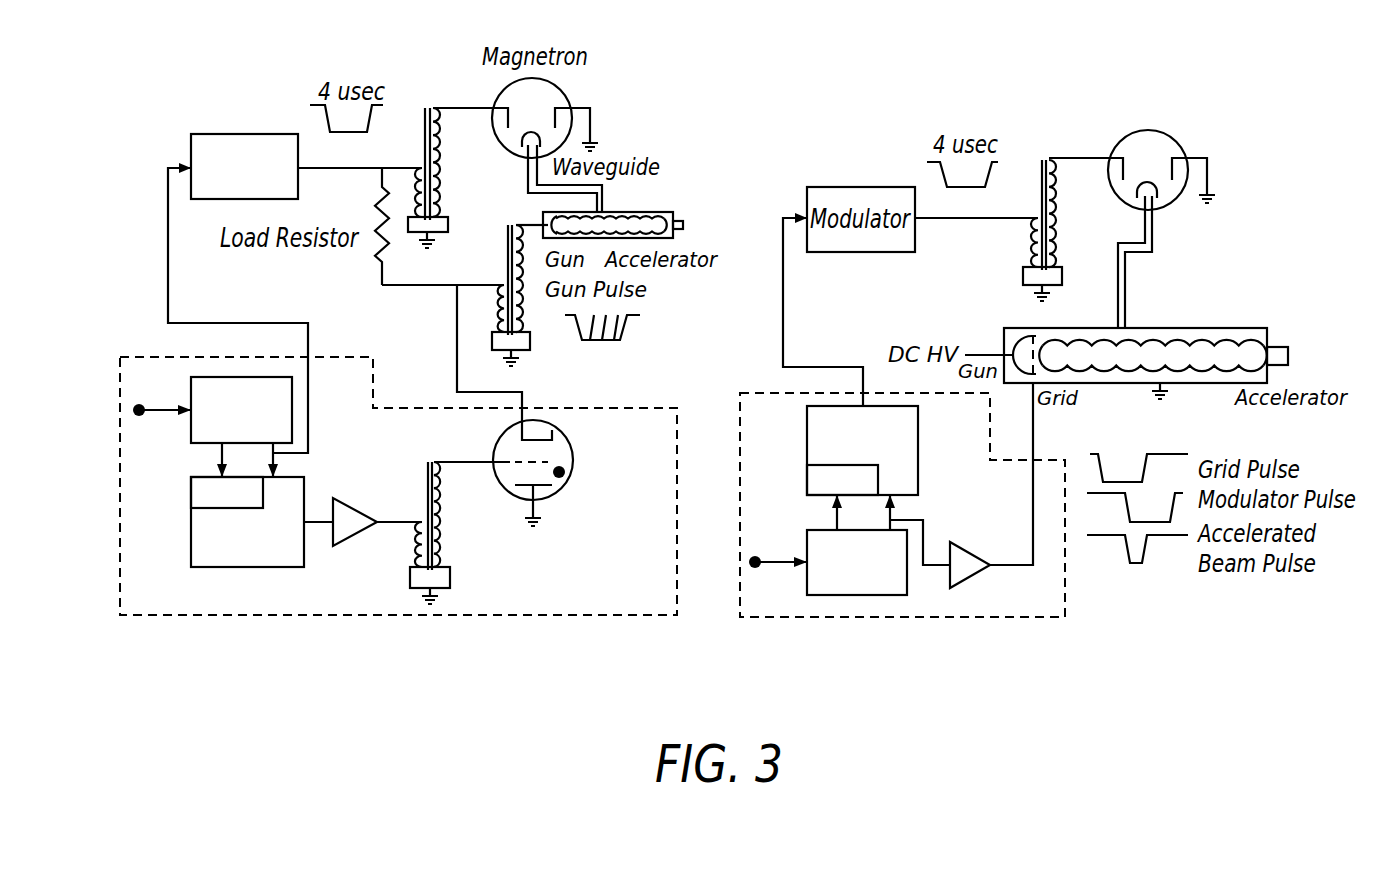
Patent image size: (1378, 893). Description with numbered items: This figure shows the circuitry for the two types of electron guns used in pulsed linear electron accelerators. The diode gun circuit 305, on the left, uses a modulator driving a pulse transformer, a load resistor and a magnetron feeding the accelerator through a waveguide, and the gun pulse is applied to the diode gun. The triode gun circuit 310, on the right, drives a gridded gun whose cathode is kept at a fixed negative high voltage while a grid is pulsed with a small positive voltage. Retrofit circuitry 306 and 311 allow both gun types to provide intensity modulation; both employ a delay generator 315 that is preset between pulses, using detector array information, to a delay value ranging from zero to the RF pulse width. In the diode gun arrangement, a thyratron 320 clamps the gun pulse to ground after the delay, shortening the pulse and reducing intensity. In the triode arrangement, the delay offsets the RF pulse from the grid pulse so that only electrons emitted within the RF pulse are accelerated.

The diode gun circuit 305 is at (190, 148).
The retrofit circuitry 306 is at (519, 505).
The triode gun circuit 310 is at (1232, 162).
The retrofit circuitry 311 is at (880, 617).
The delay generator 315 is at (198, 567).
The thyratron 320 is at (532, 540).